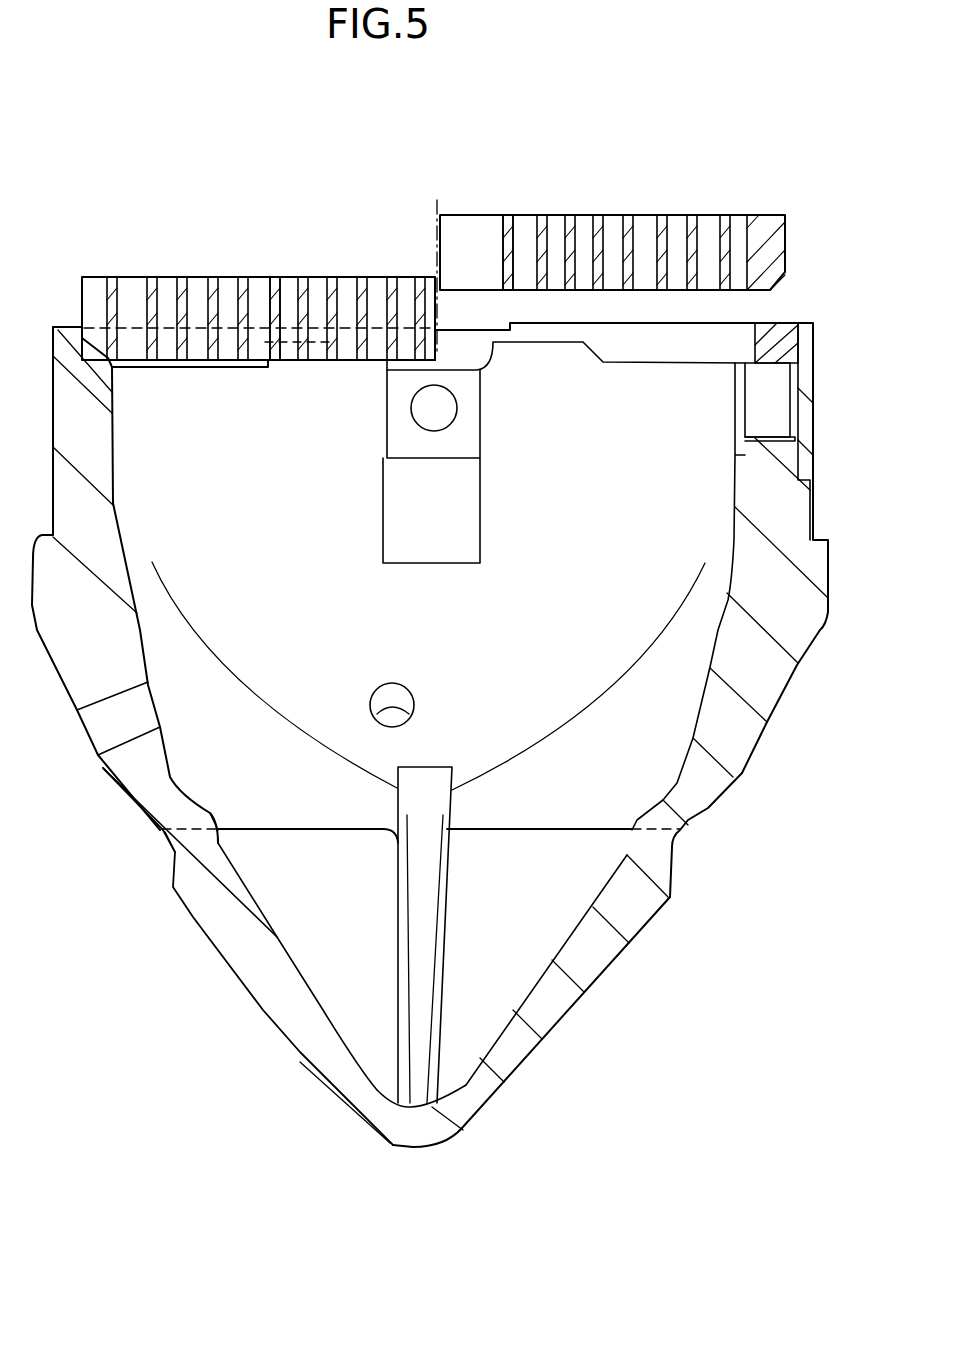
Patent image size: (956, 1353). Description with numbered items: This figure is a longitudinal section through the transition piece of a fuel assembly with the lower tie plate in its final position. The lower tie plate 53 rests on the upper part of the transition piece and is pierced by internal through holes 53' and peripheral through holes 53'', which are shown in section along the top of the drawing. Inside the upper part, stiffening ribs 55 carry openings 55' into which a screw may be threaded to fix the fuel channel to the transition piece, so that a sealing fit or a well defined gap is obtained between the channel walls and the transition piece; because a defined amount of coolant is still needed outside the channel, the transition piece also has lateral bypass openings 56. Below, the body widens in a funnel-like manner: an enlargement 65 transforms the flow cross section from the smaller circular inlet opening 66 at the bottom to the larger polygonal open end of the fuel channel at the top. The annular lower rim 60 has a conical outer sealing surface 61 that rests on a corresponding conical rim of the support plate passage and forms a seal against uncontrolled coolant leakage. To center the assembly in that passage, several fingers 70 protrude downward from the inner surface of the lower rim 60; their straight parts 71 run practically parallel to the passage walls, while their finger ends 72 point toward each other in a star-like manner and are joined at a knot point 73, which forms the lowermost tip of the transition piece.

The lower tie plate 53 is at (433, 238).
The internal through holes 53' is at (523, 201).
The peripheral through holes 53'' is at (266, 267).
The stiffening ribs 55 is at (440, 576).
The openings 55' is at (823, 382).
The lateral bypass openings 56 is at (393, 692).
The annular lower rim 60 is at (287, 828).
The outer sealing surface 61 is at (708, 808).
The enlargement 65 is at (145, 643).
The inlet opening 66 is at (520, 830).
The fingers 70 is at (250, 978).
The straight parts 71 is at (197, 848).
The finger ends 72 is at (552, 1013).
The knot point 73 is at (400, 1147).